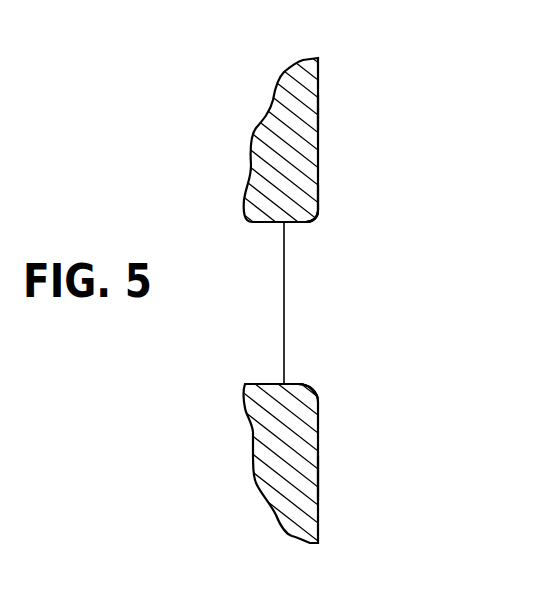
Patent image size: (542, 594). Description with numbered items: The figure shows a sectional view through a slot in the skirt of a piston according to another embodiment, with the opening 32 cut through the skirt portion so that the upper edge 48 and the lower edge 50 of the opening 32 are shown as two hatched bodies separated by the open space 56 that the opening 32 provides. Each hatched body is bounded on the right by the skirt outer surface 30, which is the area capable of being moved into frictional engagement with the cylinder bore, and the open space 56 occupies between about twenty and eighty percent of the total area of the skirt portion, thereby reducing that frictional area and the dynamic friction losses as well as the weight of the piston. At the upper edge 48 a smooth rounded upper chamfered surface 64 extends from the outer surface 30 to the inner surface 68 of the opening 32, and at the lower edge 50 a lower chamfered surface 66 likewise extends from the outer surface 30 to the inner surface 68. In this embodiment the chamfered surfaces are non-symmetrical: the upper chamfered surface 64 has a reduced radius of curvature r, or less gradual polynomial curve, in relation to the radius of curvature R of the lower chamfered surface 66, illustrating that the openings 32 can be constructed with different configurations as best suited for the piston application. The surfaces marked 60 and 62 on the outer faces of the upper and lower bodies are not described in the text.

The skirt outer surface 30 is at (318, 80).
The outer surface of first seal member 60 is at (318, 113).
The upper edge 48 is at (318, 202).
The upper chamfered surface 64 is at (317, 218).
The reduced radius of curvature r is at (310, 216).
The inner surface 68 is at (260, 223).
The open space 56 is at (271, 310).
The opening 32 is at (455, 252).
The lower edge 50 is at (318, 398).
The radius of curvature R is at (298, 385).
The lower chamfered surface 66 is at (308, 392).
The outer surface of second seal member 62 is at (318, 472).